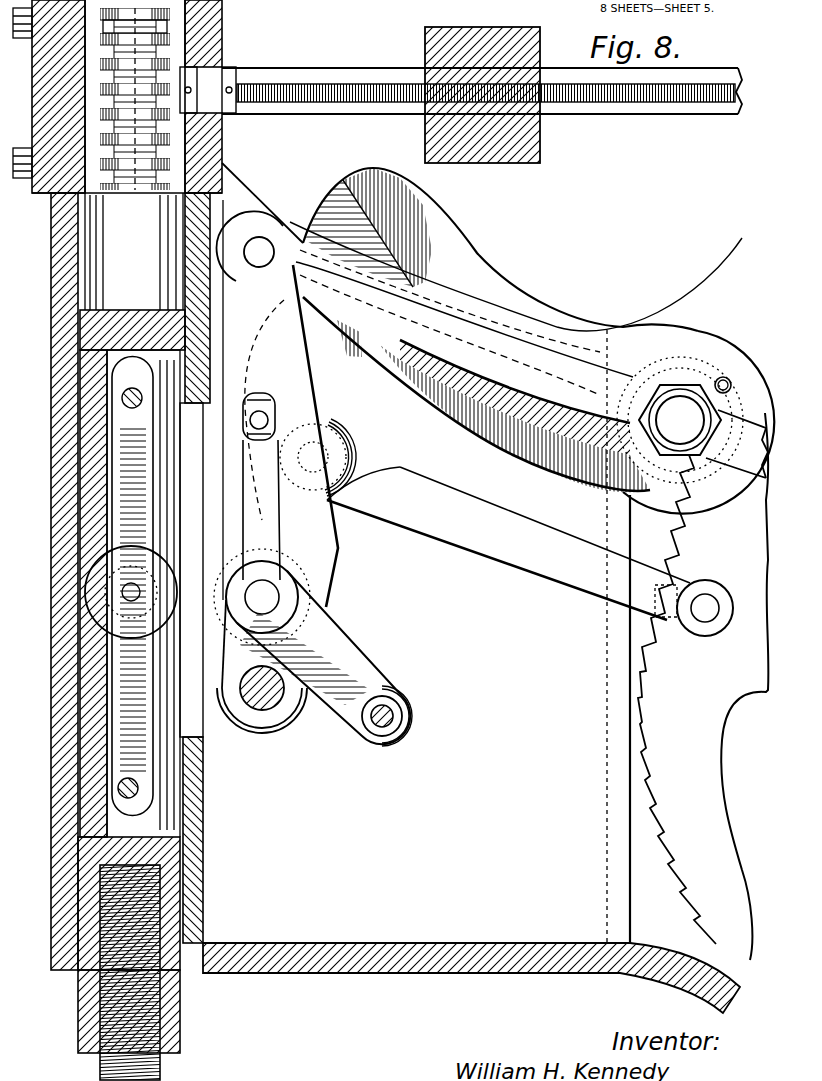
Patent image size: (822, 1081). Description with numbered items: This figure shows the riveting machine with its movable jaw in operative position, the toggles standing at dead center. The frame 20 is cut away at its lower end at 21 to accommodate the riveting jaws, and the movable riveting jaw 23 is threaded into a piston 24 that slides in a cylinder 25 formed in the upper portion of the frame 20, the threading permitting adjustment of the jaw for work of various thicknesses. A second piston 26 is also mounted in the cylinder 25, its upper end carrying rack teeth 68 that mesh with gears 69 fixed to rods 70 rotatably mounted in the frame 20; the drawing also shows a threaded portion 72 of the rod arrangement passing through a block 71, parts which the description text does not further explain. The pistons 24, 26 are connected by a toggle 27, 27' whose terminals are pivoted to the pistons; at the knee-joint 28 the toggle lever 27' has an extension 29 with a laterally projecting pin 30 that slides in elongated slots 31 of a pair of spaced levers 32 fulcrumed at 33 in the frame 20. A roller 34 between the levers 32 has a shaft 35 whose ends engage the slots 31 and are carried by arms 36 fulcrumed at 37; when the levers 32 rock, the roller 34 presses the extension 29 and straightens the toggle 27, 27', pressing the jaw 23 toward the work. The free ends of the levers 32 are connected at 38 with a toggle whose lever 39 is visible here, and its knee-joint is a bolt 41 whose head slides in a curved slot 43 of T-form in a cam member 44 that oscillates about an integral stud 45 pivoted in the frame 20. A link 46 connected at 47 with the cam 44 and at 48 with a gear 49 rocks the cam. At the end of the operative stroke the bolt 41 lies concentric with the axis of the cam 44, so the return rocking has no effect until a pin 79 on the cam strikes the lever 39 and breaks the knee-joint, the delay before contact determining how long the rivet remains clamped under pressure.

The frame 20 is at (271, 568).
The cut-away lower end 21 is at (471, 981).
The movable riveting jaw 23 is at (160, 1077).
The piston 24 is at (170, 848).
The cylinder 25 is at (80, 215).
The piston 26 is at (78, 343).
The toggle lever 27 is at (81, 586).
The toggle lever 27' is at (73, 756).
The knee-joint 28 is at (125, 592).
The extension 29 is at (207, 477).
The pin 30 is at (262, 420).
The elongated slots 31 is at (290, 530).
The levers 32 is at (300, 368).
The fulcrum 33 is at (268, 700).
The roller 34 is at (737, 444).
The roller shaft 35 is at (265, 597).
The arms 36 is at (343, 643).
The fulcrum 37 is at (405, 716).
The connection 38 is at (262, 250).
The toggle lever 39 is at (558, 352).
The bolt 41 is at (668, 405).
The curved slot 43 is at (395, 248).
The cam member 44 is at (503, 280).
The stud 45 is at (715, 370).
The link 46 is at (500, 540).
The connection 47 is at (327, 460).
The connection 48 is at (706, 612).
The gear 49 is at (647, 727).
The rack teeth 68 is at (170, 52).
The gears 69 is at (165, 14).
The rods 70 is at (628, 116).
The bearing block 71 is at (520, 160).
The screw thread 72 is at (676, 104).
The pin 79 is at (728, 380).